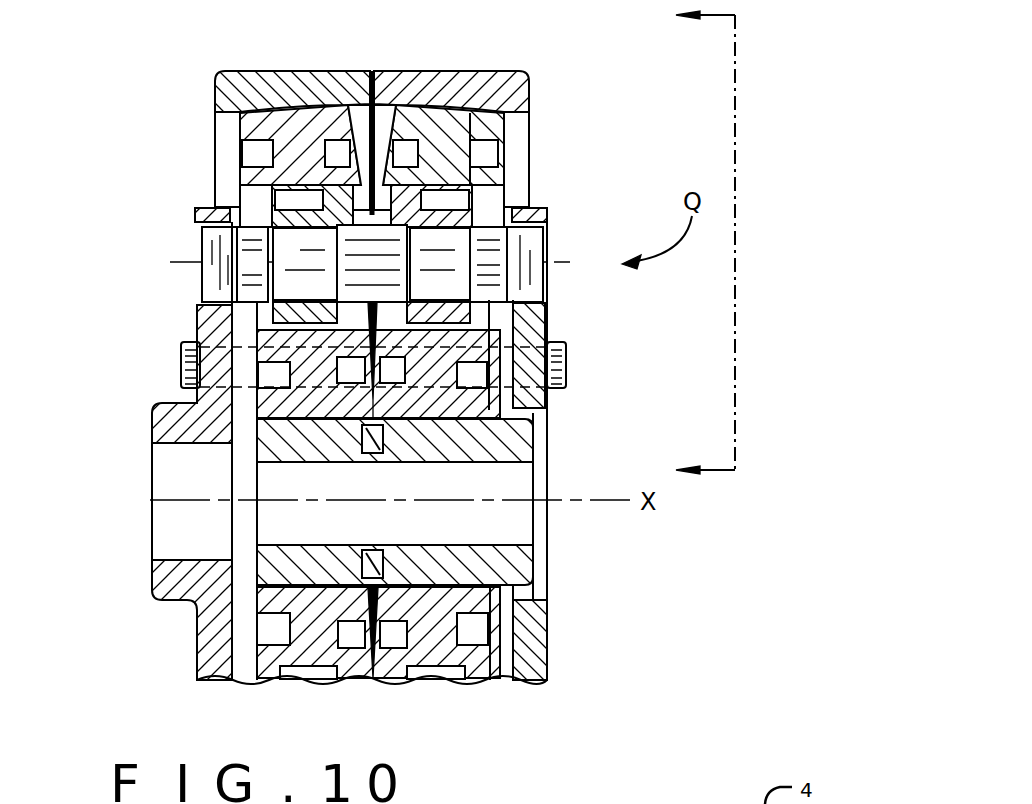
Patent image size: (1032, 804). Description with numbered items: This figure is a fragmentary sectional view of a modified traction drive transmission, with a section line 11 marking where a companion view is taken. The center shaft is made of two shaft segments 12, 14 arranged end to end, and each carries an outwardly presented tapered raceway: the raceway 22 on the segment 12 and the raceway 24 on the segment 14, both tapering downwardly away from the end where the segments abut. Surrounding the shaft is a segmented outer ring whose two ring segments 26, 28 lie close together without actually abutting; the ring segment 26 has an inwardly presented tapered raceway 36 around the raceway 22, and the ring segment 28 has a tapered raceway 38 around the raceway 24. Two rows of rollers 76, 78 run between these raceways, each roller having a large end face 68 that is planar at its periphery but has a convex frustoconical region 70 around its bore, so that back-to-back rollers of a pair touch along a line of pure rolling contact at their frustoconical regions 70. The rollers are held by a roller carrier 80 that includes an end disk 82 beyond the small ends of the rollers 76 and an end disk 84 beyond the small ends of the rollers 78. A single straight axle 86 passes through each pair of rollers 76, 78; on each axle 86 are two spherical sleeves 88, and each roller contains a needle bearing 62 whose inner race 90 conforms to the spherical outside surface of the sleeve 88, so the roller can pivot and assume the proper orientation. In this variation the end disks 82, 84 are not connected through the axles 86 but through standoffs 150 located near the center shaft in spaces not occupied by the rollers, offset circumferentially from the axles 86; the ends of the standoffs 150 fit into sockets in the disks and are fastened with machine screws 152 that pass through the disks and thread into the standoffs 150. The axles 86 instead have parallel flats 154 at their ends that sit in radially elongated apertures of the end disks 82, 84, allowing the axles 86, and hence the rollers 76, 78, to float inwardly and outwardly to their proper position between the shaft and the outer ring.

The section line 11- 11 is at (686, 248).
The shaft segment 12 is at (257, 473).
The shaft segment 14 is at (497, 452).
The raceway 22 is at (290, 622).
The raceway 24 is at (470, 603).
The ring segment 26 is at (265, 71).
The ring segment 28 is at (462, 71).
The tapered raceway 36 is at (300, 123).
The tapered raceway 38 is at (423, 117).
The needle bearing 62 is at (285, 196).
The large end face 68 is at (372, 678).
The frustoconical region 70 is at (265, 340).
The rollers 76 is at (239, 130).
The rollers 78 is at (490, 122).
The roller carrier 80 is at (152, 585).
The end disk 82 is at (197, 333).
The end disk 84 is at (530, 325).
The axle 86 is at (495, 275).
The spherical sleeve 88 is at (273, 249).
The inner race 90 is at (273, 213).
The standoff 150 is at (455, 430).
The machine screw 152 is at (181, 368).
The parallel flats 154 is at (217, 283).